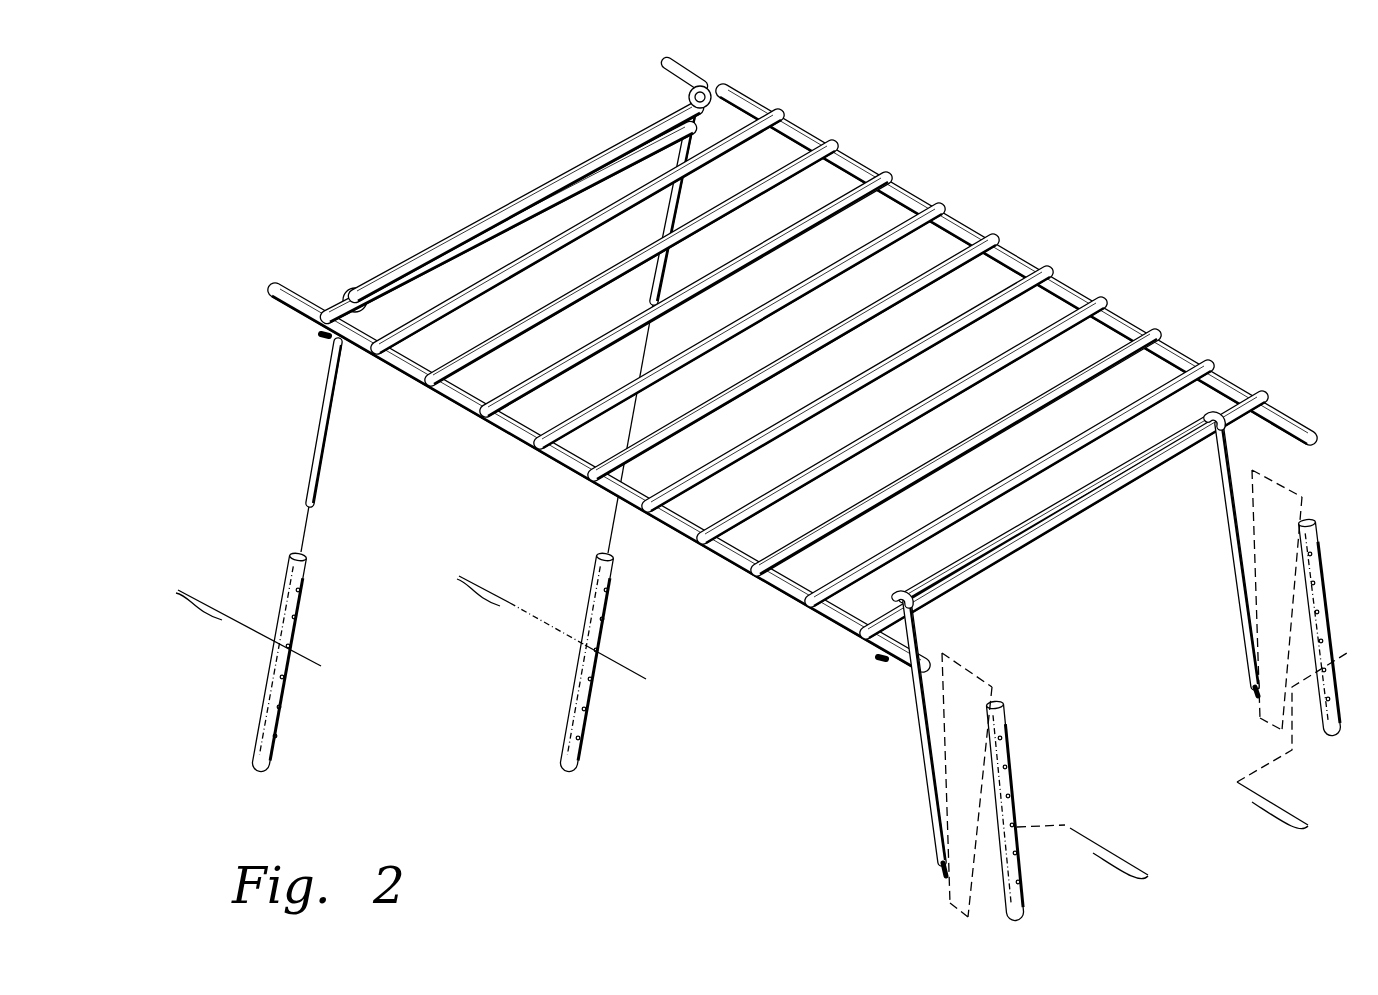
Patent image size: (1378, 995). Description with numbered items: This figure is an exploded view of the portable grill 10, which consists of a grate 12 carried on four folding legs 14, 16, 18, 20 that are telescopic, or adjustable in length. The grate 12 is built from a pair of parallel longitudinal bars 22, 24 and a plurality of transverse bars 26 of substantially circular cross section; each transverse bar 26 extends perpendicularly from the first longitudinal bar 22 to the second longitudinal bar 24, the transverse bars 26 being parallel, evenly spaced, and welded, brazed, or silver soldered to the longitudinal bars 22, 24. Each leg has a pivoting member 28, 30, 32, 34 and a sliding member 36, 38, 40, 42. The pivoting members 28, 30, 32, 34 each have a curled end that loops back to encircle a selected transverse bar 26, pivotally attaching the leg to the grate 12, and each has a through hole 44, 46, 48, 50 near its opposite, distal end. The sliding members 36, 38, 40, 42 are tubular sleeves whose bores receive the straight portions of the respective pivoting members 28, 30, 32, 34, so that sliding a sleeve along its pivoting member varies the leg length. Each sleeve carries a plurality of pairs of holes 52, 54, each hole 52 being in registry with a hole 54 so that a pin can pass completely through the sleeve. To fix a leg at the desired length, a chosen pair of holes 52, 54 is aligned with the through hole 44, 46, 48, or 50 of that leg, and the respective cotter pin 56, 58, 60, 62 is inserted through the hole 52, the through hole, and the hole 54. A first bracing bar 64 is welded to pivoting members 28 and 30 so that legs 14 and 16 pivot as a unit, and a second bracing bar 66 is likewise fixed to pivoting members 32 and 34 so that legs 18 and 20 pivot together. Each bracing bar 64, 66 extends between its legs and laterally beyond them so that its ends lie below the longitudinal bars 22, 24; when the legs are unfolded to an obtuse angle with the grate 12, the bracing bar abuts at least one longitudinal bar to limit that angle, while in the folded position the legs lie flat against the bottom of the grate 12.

The portable grill 10 is at (756, 469).
The grate 12 is at (791, 367).
The first leg 14 is at (872, 735).
The second leg 16 is at (1188, 563).
The third leg 18 is at (307, 447).
The fourth leg 20 is at (674, 332).
The first longitudinal bar 22 is at (413, 360).
The second longitudinal bar 24 is at (853, 168).
The transverse bars 26 is at (1043, 267).
The pivoting member of first leg 28 is at (925, 722).
The pivoting member of second leg 30 is at (1235, 527).
The pivoting member of third leg 32 is at (331, 414).
The pivoting member of fourth leg 34 is at (643, 290).
The sliding member of first leg 36 is at (1015, 807).
The sliding member of second leg 38 is at (1328, 730).
The sliding member of third leg 40 is at (267, 691).
The sliding member of fourth leg 42 is at (574, 687).
The through hole of pivoting member 28 44 is at (935, 860).
The through hole of pivoting member 30 46 is at (1248, 683).
The through hole of pivoting member 32 48 is at (312, 492).
The through hole of pivoting member 34 50 is at (653, 287).
The holes 52 is at (1313, 555).
The holes 54 is at (300, 590).
The cotter pin 56 is at (1128, 860).
The cotter pin 58 is at (1273, 807).
The cotter pin 60 is at (201, 592).
The cotter pin 62 is at (483, 580).
The first bracing bar 64 is at (1078, 548).
The second bracing bar 66 is at (513, 225).